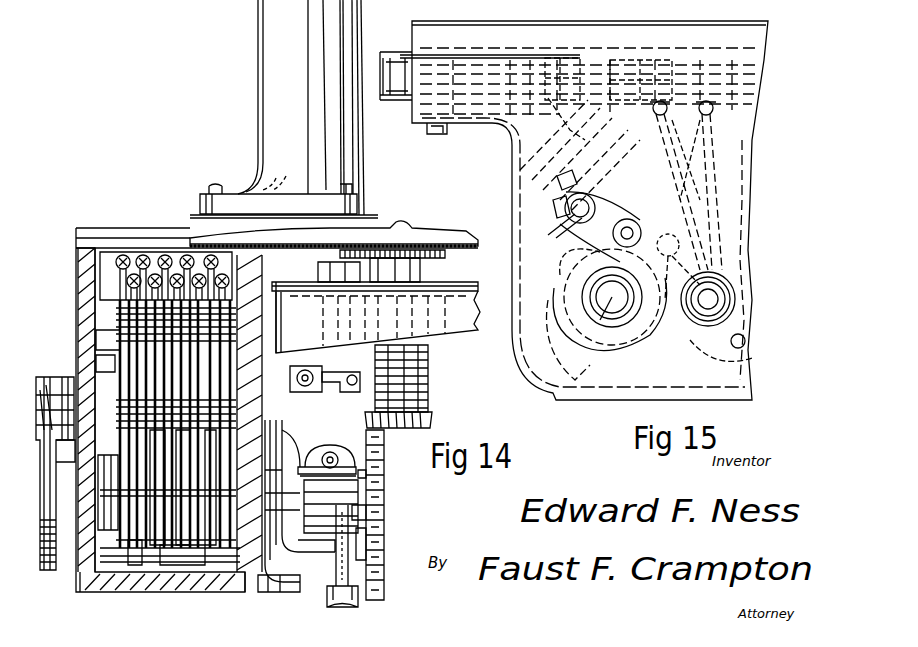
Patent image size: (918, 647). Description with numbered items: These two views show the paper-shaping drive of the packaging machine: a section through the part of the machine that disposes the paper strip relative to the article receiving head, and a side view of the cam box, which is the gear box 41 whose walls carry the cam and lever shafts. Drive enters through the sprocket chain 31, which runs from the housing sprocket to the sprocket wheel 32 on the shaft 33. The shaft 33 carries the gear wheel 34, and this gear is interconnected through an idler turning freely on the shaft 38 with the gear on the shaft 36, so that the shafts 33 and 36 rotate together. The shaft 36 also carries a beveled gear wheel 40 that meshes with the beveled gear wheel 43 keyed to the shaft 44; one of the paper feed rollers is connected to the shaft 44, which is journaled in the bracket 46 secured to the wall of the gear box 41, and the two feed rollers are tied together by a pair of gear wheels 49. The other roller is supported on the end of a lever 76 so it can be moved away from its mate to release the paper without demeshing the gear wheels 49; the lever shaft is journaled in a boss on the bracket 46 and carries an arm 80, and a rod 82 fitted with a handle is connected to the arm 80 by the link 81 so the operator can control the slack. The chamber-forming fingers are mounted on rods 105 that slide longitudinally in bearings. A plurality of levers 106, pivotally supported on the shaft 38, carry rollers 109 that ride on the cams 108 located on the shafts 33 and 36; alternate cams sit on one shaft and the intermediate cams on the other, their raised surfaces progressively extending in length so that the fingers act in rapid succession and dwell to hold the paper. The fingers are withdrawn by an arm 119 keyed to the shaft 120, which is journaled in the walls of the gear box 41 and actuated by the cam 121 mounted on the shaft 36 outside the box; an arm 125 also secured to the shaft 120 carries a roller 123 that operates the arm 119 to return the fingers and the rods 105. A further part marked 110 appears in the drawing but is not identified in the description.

In FIG. 14, the rods 105 is at (156, 256).
In FIG. 15, the rods 105 is at (650, 62).
In FIG. 15, the bracket 110 is at (580, 68).
In FIG. 14, the levers 106 is at (202, 376).
In FIG. 15, the levers 106 is at (722, 150).
In FIG. 14, the arm 119 is at (125, 338).
In FIG. 15, the arm 119 is at (612, 166).
In FIG. 15, the arm 125 is at (600, 195).
In FIG. 14, the roller 123 is at (96, 358).
In FIG. 15, the roller 123 is at (636, 222).
In FIG. 14, the gear box 41 is at (278, 586).
In FIG. 15, the gear box 41 is at (746, 200).
In FIG. 14, the rollers 109 is at (135, 552).
In FIG. 15, the rollers 109 is at (725, 246).
In FIG. 15, the shaft 38 is at (714, 300).
In FIG. 15, the shaft 120 is at (554, 234).
In FIG. 14, the cam 121 is at (52, 572).
In FIG. 15, the cam 121 is at (566, 348).
In FIG. 15, the shaft 36 is at (620, 306).
In FIG. 14, the lever 76 is at (322, 268).
In FIG. 14, the gear wheels 49 is at (440, 256).
In FIG. 14, the bracket 46 is at (440, 325).
In FIG. 14, the shaft 44 is at (428, 396).
In FIG. 14, the beveled gear wheel 43 is at (432, 420).
In FIG. 14, the beveled gear wheel 40 is at (384, 442).
In FIG. 14, the sprocket wheel 32 is at (384, 486).
In FIG. 14, the shaft 33 is at (116, 500).
In FIG. 14, the sprocket chain 31 is at (384, 540).
In FIG. 14, the link 81 is at (307, 390).
In FIG. 14, the arm 80 is at (352, 392).
In FIG. 14, the rod 82 is at (330, 445).
In FIG. 14, the gear wheel 34 is at (265, 580).
In FIG. 14, the cams 108 is at (202, 552).